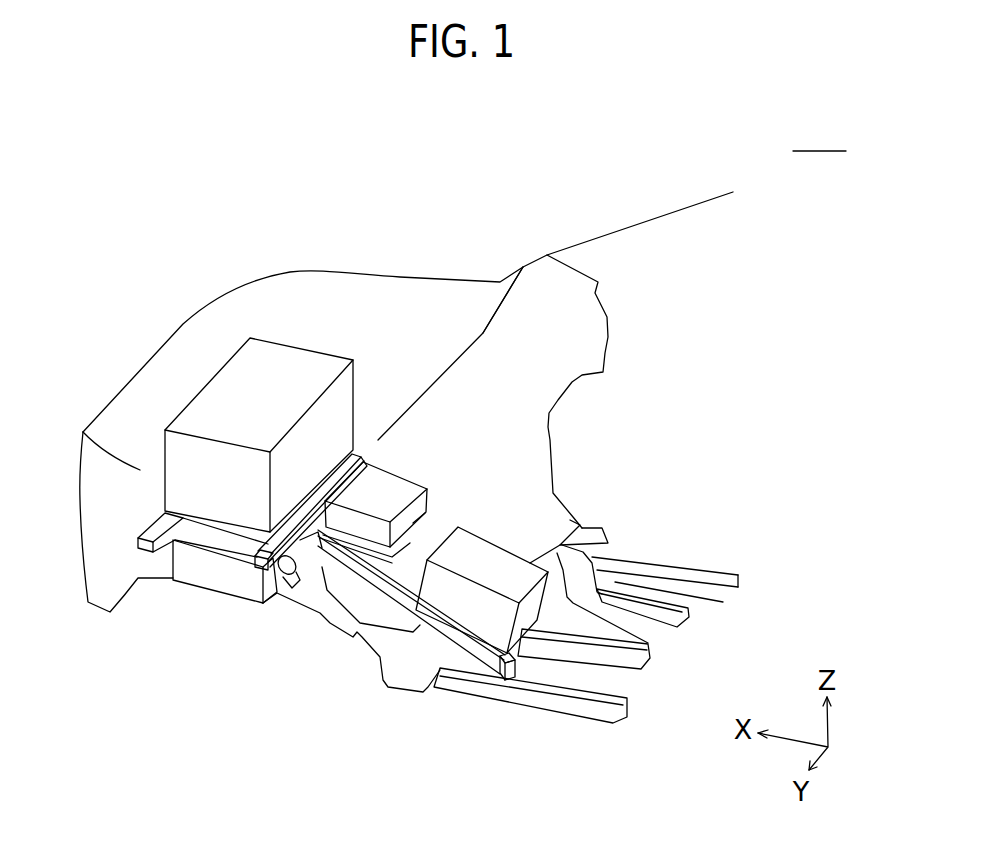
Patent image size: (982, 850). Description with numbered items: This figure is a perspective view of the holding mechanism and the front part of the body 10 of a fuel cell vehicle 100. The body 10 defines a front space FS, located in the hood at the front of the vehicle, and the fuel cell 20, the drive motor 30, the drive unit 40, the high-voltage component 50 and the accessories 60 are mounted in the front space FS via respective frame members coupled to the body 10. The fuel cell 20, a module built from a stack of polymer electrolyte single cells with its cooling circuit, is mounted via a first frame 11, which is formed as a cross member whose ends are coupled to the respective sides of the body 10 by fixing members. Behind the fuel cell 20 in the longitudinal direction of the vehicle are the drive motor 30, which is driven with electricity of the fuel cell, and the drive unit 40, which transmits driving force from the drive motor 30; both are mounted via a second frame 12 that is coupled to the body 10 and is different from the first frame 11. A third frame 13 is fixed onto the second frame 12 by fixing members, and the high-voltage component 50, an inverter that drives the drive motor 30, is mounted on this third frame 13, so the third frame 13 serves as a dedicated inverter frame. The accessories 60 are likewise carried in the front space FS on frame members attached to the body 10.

The fuel cell vehicle 100 is at (819, 135).
The body 10 is at (183, 320).
The first frame 11 is at (142, 546).
The second frame 12 is at (505, 672).
The third frame 13 is at (320, 530).
The fuel cell 20 is at (263, 378).
The drive motor 30 is at (487, 567).
The drive unit 40 is at (366, 597).
The high-voltage component 50 is at (396, 492).
The accessories 60 is at (221, 588).
The front space FS is at (410, 363).